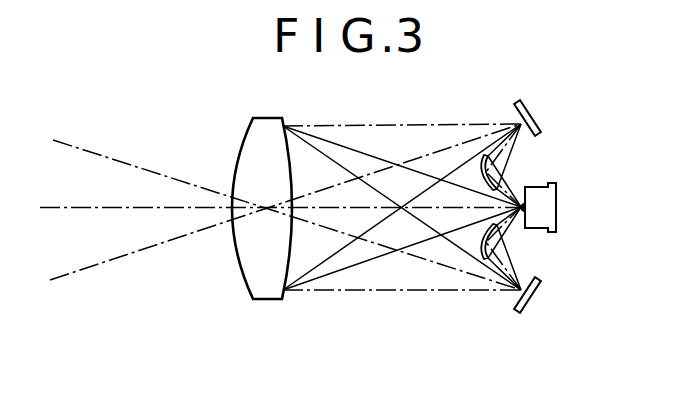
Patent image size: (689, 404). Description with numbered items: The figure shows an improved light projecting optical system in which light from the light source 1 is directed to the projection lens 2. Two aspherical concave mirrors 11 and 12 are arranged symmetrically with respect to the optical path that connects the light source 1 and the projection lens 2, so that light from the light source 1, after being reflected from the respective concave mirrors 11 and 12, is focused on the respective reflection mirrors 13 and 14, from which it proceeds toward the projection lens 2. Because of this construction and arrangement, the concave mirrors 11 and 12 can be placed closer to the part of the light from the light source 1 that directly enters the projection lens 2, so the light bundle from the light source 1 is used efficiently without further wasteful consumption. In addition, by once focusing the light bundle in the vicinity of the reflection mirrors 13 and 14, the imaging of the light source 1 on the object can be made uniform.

The light source 1 is at (556, 212).
The projection lens 2 is at (271, 118).
The aspherical concave mirror 11 is at (498, 183).
The aspherical concave mirror 12 is at (486, 259).
The reflection mirror 13 is at (526, 106).
The reflection mirror 14 is at (531, 303).